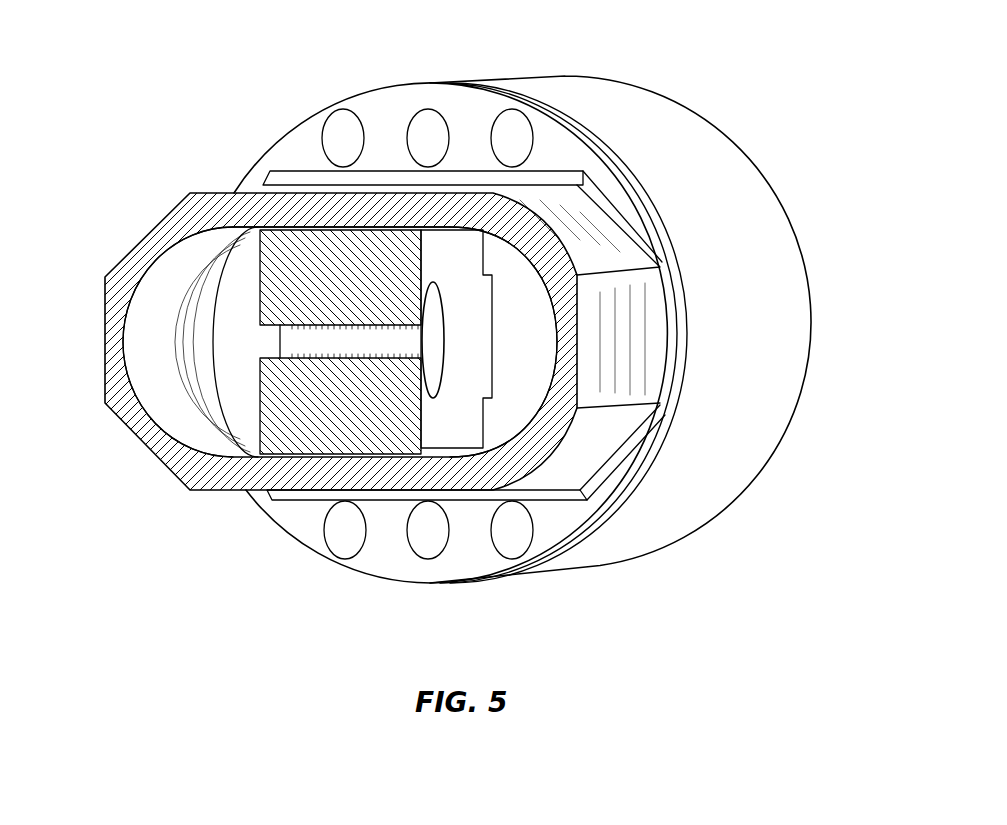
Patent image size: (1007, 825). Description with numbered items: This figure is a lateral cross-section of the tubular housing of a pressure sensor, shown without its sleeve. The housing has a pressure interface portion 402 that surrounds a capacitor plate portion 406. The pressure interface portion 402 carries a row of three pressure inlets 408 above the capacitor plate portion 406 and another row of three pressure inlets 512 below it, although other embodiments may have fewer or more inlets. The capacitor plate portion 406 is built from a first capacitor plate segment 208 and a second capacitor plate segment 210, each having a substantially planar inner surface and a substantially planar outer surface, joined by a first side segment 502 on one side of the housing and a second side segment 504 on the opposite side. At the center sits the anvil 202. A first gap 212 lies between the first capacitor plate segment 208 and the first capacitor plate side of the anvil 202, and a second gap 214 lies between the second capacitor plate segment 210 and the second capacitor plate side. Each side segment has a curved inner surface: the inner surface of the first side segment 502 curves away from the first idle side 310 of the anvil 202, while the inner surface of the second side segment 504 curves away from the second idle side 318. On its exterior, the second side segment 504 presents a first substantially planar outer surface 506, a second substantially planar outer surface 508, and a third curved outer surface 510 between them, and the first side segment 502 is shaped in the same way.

The anvil 202 is at (355, 430).
The first capacitor plate segment 208 is at (205, 203).
The second capacitor plate segment 210 is at (328, 478).
The first gap 212 is at (290, 228).
The second gap 214 is at (280, 458).
The first idle side 310 is at (445, 430).
The second idle side 318 is at (253, 403).
The pressure interface portion 402 is at (567, 87).
The capacitor plate portion 406 is at (152, 232).
The pressure inlets 408 is at (343, 138).
The first side segment 502 is at (112, 343).
The second side segment 504 is at (580, 458).
The first substantially planar outer surface 506 is at (607, 233).
The second substantially planar outer surface 508 is at (590, 470).
The third curved outer surface 510 is at (637, 300).
The pressure inlets 512 is at (525, 443).